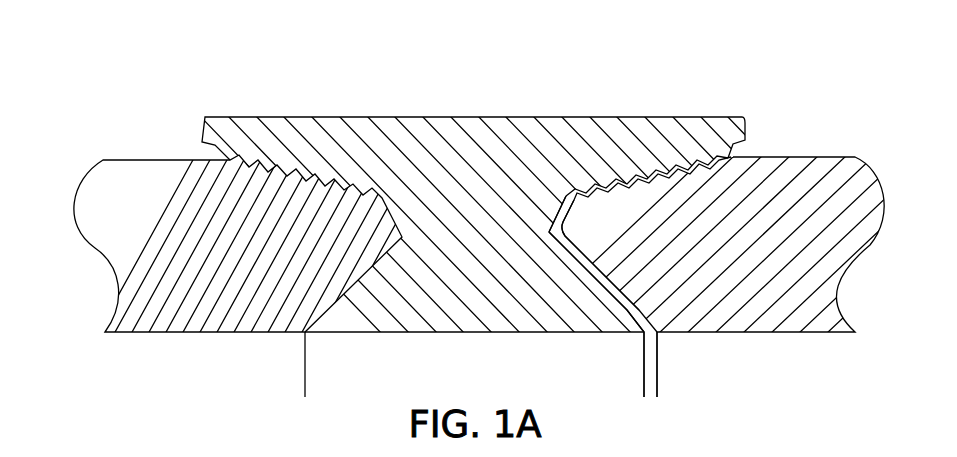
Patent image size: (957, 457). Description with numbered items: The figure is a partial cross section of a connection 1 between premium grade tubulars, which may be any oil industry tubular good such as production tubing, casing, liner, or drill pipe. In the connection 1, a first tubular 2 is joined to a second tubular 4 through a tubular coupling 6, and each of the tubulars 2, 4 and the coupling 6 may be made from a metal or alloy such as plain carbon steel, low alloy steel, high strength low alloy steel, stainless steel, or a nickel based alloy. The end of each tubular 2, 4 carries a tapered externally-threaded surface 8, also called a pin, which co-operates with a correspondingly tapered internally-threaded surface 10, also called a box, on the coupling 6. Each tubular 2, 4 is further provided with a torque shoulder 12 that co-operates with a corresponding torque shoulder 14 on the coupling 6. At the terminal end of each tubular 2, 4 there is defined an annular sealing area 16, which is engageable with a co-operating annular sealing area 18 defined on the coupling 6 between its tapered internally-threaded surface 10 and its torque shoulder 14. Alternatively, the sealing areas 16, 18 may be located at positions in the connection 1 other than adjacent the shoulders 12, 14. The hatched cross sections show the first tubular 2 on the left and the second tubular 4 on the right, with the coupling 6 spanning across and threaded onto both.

The connection 1 is at (88, 76).
The first tubular 2 is at (103, 160).
The second tubular 4 is at (812, 157).
The tubular coupling 6 is at (466, 117).
The tapered externally-threaded surface 8 is at (733, 162).
The tapered internally-threaded surface 10 is at (655, 175).
The torque shoulder 12 is at (626, 313).
The torque shoulder 14 is at (588, 268).
The annular sealing area 16 is at (557, 222).
The annular sealing area 18 is at (560, 223).